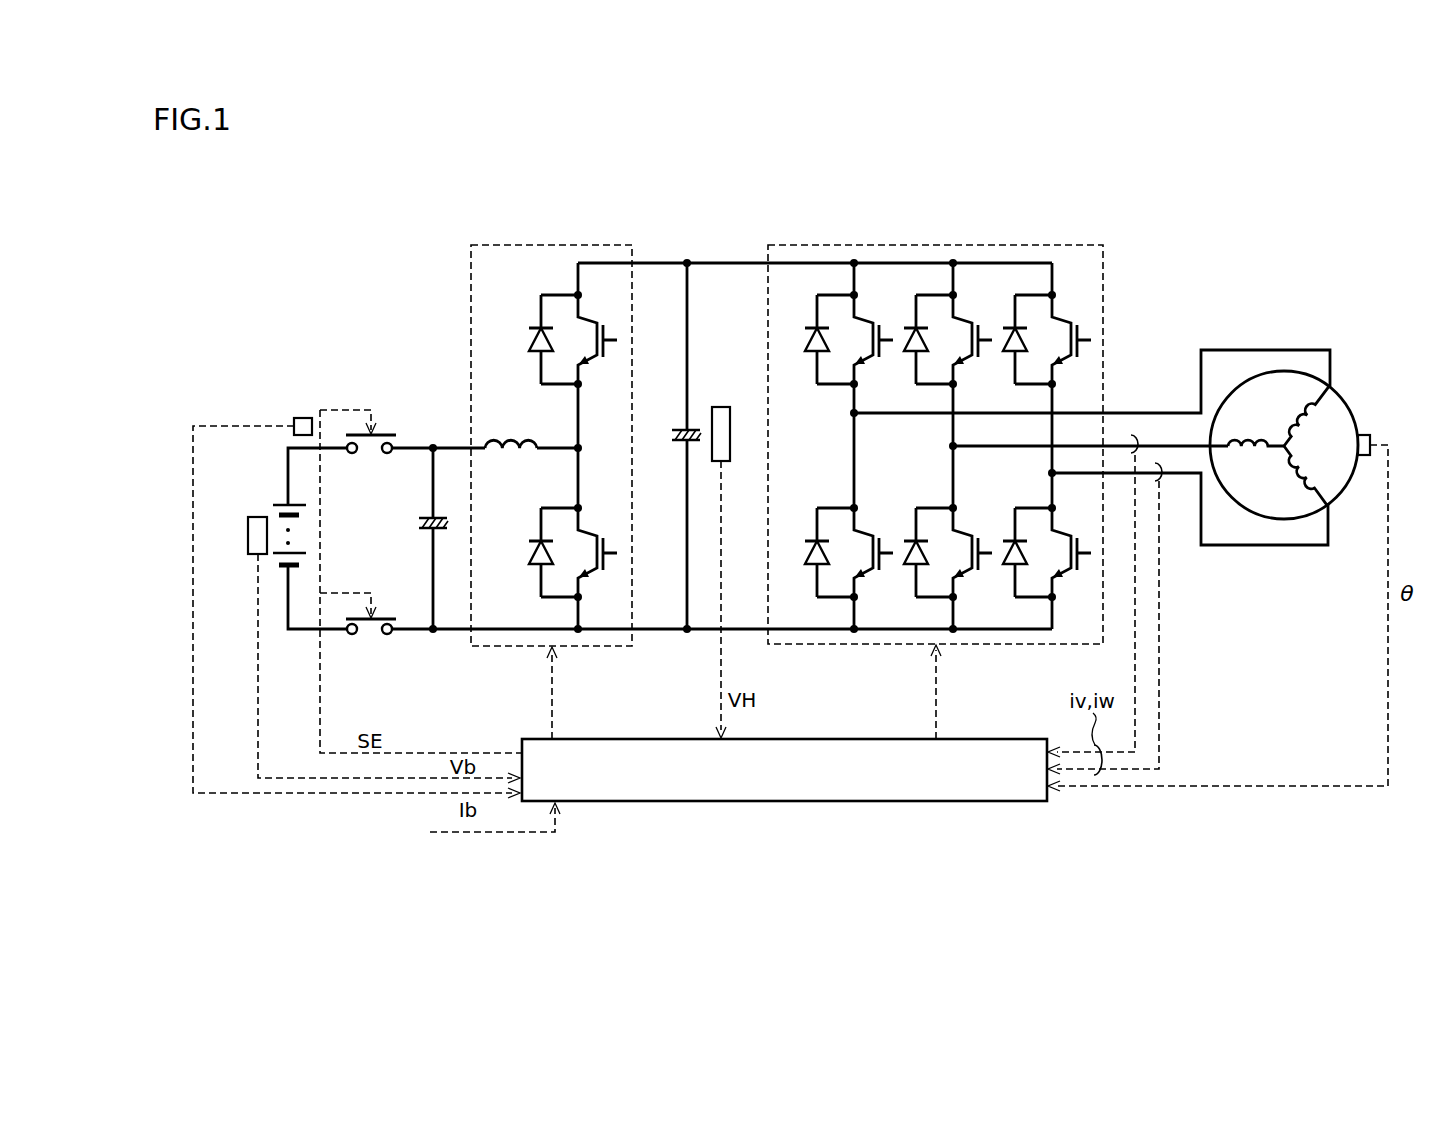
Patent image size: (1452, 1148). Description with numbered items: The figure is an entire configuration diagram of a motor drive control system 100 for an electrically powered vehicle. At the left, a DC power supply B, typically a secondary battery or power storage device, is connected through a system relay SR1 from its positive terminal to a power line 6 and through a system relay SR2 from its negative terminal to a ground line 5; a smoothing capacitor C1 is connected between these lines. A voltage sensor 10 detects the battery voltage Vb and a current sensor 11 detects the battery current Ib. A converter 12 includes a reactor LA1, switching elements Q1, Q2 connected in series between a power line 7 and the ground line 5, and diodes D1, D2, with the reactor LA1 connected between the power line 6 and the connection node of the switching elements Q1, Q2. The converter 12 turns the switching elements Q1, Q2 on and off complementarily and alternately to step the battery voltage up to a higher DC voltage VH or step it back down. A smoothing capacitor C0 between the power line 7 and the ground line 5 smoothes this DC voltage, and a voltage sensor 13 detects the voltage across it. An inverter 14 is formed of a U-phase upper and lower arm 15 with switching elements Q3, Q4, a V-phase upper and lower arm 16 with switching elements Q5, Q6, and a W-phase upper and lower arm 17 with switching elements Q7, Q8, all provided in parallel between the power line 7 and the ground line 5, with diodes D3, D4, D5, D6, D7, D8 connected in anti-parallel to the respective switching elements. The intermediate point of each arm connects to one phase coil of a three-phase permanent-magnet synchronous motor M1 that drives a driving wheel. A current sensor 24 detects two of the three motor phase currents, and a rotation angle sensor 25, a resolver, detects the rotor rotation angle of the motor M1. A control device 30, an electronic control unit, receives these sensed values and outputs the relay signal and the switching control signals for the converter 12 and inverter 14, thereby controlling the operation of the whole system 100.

The motor drive control system 100 is at (715, 171).
The voltage sensor 10 is at (250, 516).
The current sensor 11 is at (303, 418).
The DC power supply B is at (285, 505).
The system relay SR1 is at (383, 432).
The system relay SR2 is at (383, 615).
The smoothing capacitor C1 is at (426, 516).
The power line 6 is at (434, 444).
The converter 12 is at (557, 244).
The reactor LA1 is at (503, 435).
The switching element Q1 is at (595, 339).
The switching element Q2 is at (595, 552).
The diode D1 is at (537, 339).
The diode D2 is at (537, 552).
The power line 7 is at (720, 262).
The ground line 5 is at (660, 632).
The smoothing capacitor C0 is at (679, 422).
The voltage sensor 13 is at (722, 406).
The inverter 14 is at (933, 245).
The switching element Q3 is at (871, 339).
The switching element Q4 is at (871, 551).
The switching element Q5 is at (971, 339).
The switching element Q6 is at (971, 551).
The switching element Q7 is at (1069, 339).
The switching element Q8 is at (1069, 551).
The diode D3 is at (818, 339).
The diode D4 is at (818, 552).
The diode D5 is at (917, 343).
The diode D6 is at (917, 555).
The diode D7 is at (1016, 343).
The diode D8 is at (1016, 555).
The U-phase upper and lower arm 15 is at (840, 423).
The V-phase upper and lower arm 16 is at (941, 449).
The W-phase upper and lower arm 17 is at (1039, 479).
The current sensor 24 is at (1131, 434).
The motor M1 is at (1351, 405).
The rotation angle sensor 25 is at (1370, 430).
The control device 30 is at (950, 802).